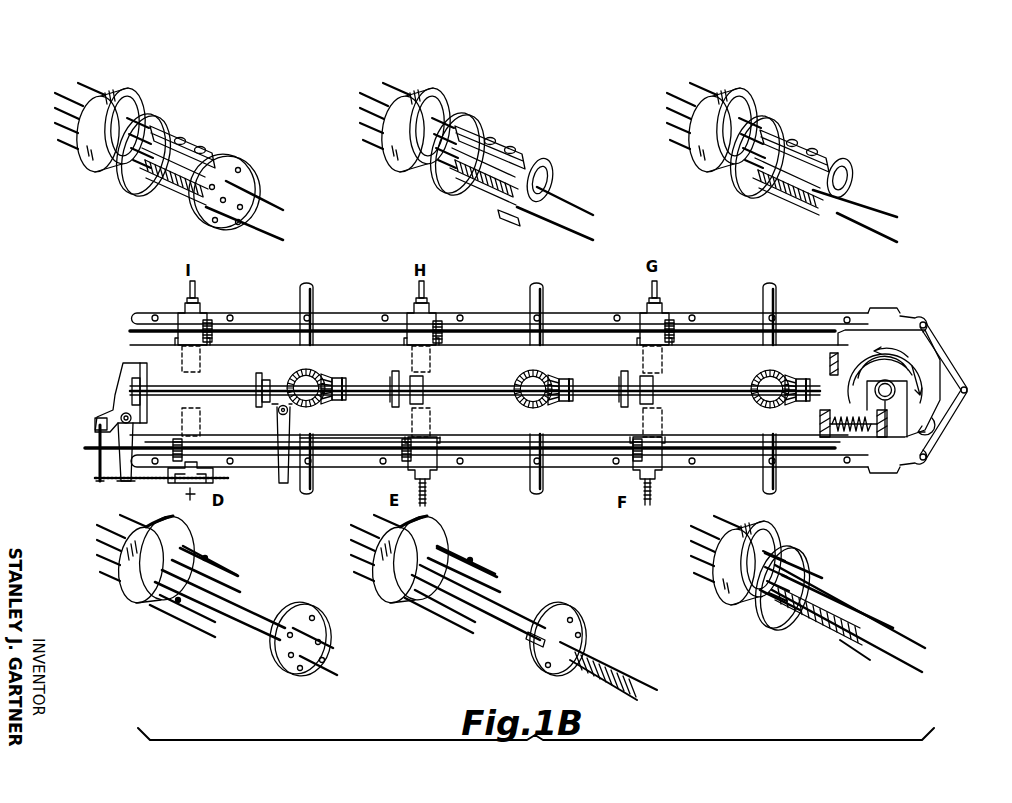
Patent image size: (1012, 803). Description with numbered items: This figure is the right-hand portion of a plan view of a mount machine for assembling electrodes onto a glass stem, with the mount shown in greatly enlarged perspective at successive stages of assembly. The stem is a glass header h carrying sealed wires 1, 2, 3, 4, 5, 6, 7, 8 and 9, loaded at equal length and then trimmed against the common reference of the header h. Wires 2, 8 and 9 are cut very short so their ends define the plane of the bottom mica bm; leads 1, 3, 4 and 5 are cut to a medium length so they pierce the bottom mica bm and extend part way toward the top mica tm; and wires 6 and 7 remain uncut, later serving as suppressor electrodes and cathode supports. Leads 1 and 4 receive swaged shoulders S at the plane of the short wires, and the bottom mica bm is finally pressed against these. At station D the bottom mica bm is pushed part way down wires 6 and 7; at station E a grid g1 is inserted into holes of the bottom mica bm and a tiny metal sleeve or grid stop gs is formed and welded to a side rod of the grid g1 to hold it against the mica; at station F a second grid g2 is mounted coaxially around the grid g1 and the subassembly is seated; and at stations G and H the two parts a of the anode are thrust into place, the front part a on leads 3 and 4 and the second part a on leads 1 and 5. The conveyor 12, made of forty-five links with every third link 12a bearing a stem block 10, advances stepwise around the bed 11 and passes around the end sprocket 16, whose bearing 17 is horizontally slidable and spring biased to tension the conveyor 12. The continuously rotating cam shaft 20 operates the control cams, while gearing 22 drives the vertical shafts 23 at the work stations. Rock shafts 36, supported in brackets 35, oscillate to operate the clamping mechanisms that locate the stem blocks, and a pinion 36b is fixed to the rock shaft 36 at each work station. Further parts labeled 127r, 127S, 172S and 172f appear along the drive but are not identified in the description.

The lead 1 is at (170, 203).
The wire 2 is at (110, 150).
The lead 3 is at (128, 187).
The lead 4 is at (187, 141).
The lead 5 is at (241, 604).
The wire 6 is at (284, 240).
The wire 7 is at (284, 213).
The wire 8 is at (447, 618).
The wire 9 is at (187, 550).
The stem block 10 is at (428, 492).
The bed 11 is at (222, 368).
The conveyor 12 is at (277, 432).
The link 12a is at (172, 314).
The end sprocket 16 is at (830, 368).
The bearing 17 is at (922, 426).
The cam shaft 20 is at (470, 384).
The gearing 22 is at (326, 409).
The shafts 23 is at (314, 292).
The bracket 35 is at (182, 357).
The rock shaft 36 is at (130, 332).
The pinion 36b is at (208, 320).
The end bracket 127r is at (127, 366).
The shaft collar 127S is at (268, 362).
The shaft collar 172S is at (396, 372).
The shaft hub 172f is at (423, 404).
The glass header h is at (143, 109).
The bottom mica bm is at (167, 131).
The top mica tm is at (257, 174).
The anode part a is at (217, 157).
The swaged shoulder S is at (175, 610).
The grid stop gs is at (530, 644).
The grid g1 is at (648, 685).
The second grid g2 is at (847, 640).